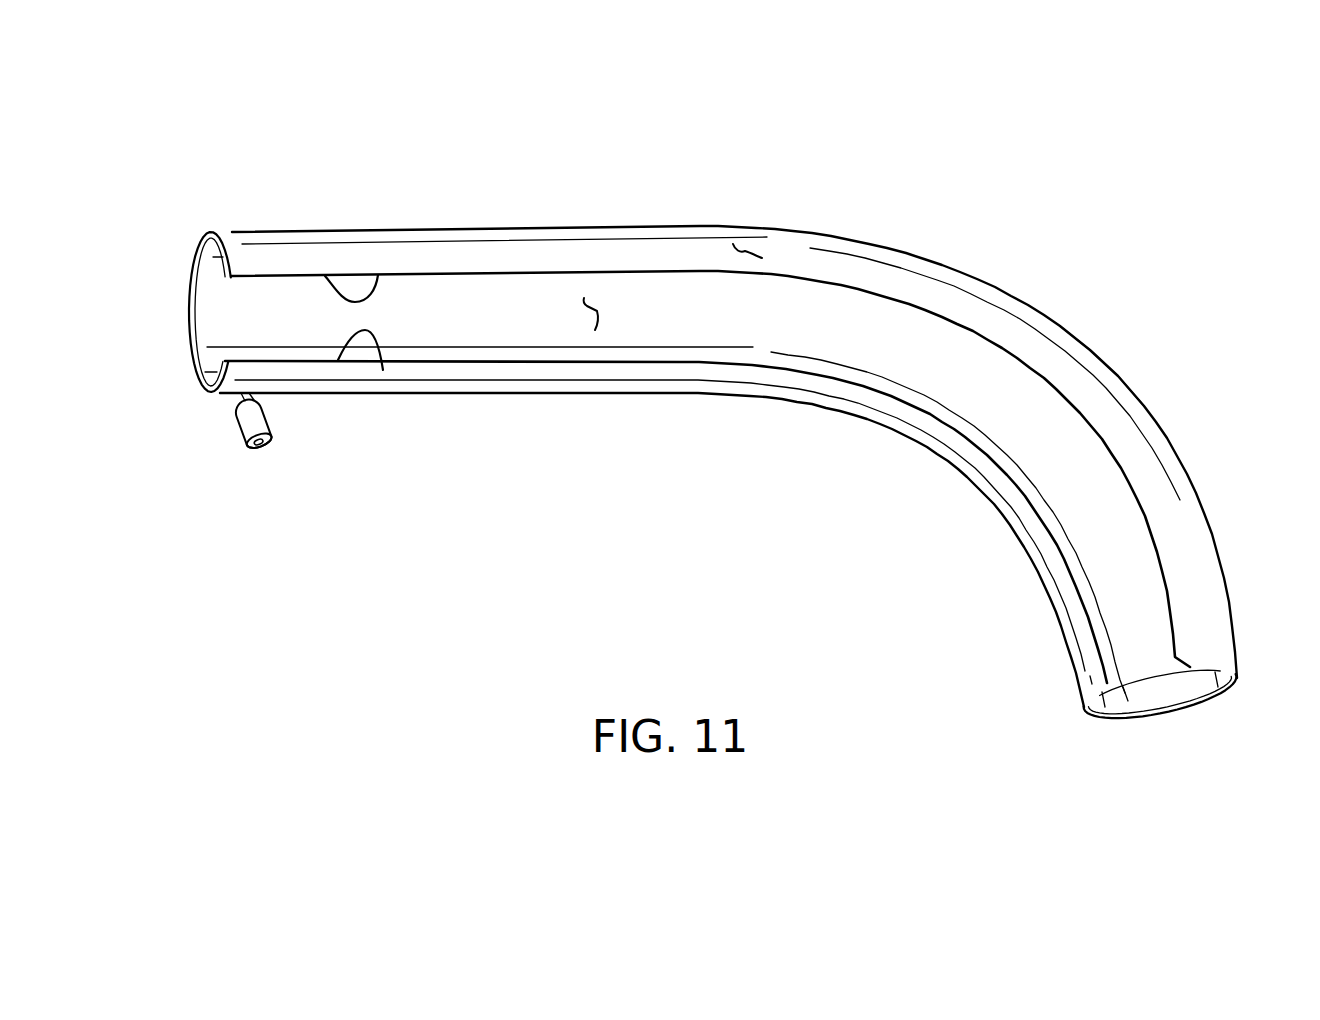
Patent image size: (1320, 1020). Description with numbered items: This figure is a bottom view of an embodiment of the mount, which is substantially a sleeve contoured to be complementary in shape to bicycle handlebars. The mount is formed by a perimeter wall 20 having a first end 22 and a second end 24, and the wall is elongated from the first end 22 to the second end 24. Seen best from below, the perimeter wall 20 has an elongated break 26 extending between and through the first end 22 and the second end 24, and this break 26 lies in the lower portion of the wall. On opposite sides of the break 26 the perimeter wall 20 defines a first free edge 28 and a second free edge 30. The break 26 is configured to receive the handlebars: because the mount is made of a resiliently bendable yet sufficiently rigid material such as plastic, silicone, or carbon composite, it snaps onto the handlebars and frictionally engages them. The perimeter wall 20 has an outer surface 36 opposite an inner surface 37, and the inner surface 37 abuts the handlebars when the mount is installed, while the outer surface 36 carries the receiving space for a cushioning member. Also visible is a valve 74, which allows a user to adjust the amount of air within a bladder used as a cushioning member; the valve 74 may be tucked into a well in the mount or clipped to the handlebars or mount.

The perimeter wall 20 is at (235, 233).
The first end 22 is at (1160, 714).
The second end 24 is at (190, 301).
The elongated break 26 is at (958, 324).
The first free edge 28 is at (378, 275).
The second free edge 30 is at (383, 370).
The outer surface 36 is at (746, 244).
The inner surface 37 is at (597, 311).
The valve 74 is at (238, 423).